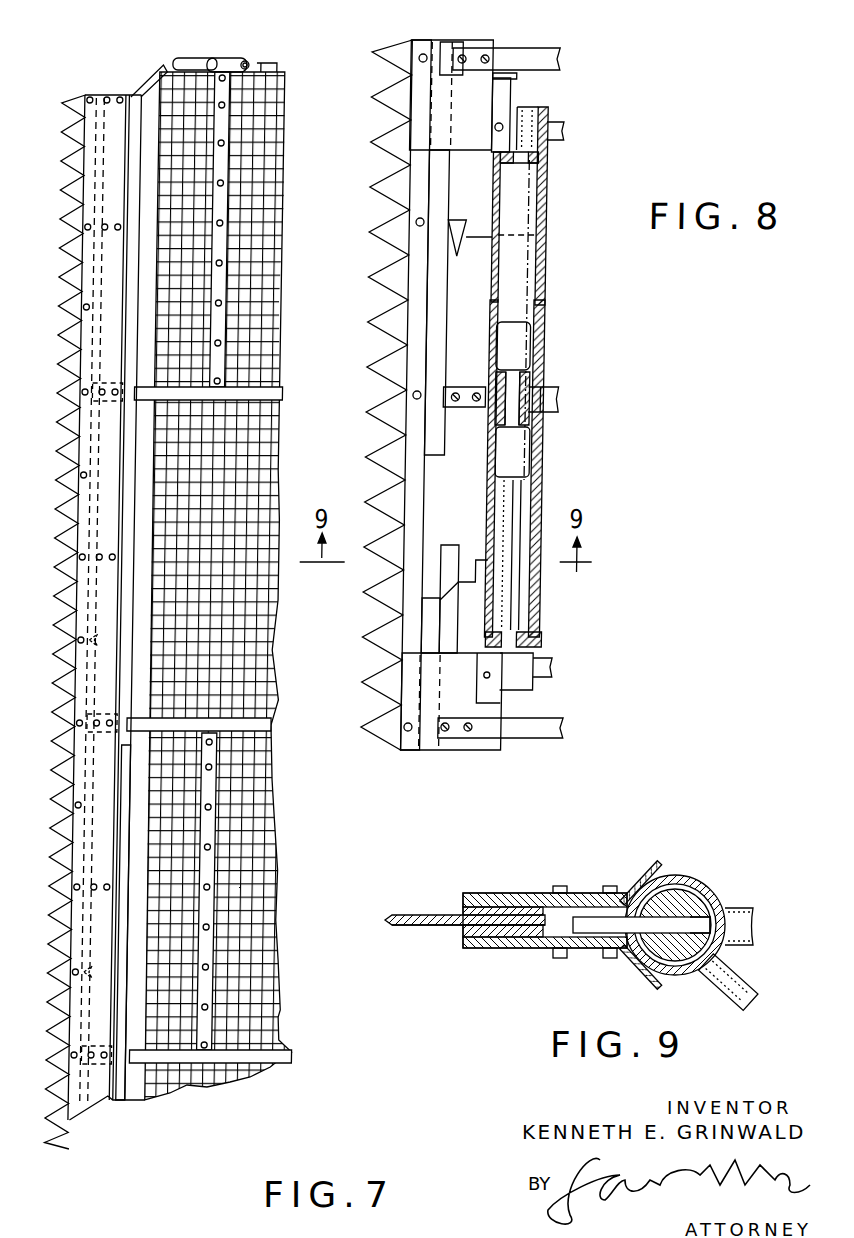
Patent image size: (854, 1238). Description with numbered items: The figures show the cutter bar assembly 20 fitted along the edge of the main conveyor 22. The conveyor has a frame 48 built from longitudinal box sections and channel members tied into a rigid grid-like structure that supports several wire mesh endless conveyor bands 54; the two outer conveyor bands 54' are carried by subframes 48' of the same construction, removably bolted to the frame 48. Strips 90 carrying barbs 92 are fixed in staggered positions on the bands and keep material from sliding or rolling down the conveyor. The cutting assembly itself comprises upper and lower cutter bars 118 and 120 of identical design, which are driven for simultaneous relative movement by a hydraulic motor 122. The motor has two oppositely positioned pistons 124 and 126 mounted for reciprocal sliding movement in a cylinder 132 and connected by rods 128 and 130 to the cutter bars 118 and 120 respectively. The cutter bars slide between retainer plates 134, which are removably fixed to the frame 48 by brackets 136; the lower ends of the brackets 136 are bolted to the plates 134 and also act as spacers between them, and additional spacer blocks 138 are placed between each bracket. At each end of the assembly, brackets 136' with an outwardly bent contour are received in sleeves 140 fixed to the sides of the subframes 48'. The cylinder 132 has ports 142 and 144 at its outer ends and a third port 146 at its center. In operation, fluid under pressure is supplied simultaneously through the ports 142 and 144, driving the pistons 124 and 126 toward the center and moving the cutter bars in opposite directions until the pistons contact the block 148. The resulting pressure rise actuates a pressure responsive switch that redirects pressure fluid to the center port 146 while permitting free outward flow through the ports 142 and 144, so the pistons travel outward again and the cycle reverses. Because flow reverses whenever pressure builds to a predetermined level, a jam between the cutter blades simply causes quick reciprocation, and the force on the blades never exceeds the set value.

In FIG. 7, the cutter bar assembly 20 is at (95, 640).
In FIG. 7, the main conveyor 22 is at (205, 553).
In FIG. 7, the frame 48 is at (246, 746).
In FIG. 7, the subframe 48' is at (253, 232).
In FIG. 7, the wire mesh endless conveyor band 54 is at (243, 746).
In FIG. 7, the outer conveyor band 54' is at (241, 232).
In FIG. 7, the strip 90 is at (224, 213).
In FIG. 7, the barb 92 is at (227, 264).
In FIG. 7, the upper cutter bar 118 is at (87, 284).
In FIG. 8, the upper cutter bar 118 is at (398, 188).
In FIG. 9, the upper cutter bar 118 is at (410, 912).
In FIG. 8, the lower cutter bar 120 is at (395, 97).
In FIG. 9, the lower cutter bar 120 is at (425, 928).
In FIG. 7, the hydraulic motor 122 is at (125, 1040).
In FIG. 8, the hydraulic motor 122 is at (564, 345).
In FIG. 9, the hydraulic motor 122 is at (703, 872).
In FIG. 8, the piston 124 is at (547, 279).
In FIG. 8, the piston 126 is at (530, 609).
In FIG. 8, the rod 128 is at (482, 231).
In FIG. 8, the rod 130 is at (482, 560).
In FIG. 9, the rod 130 is at (674, 934).
In FIG. 8, the cylinder 132 is at (551, 450).
In FIG. 9, the cylinder 132 is at (721, 895).
In FIG. 7, the retainer plate 134 is at (95, 666).
In FIG. 8, the retainer plate 134 is at (455, 437).
In FIG. 9, the retainer plate 134 is at (484, 893).
In FIG. 7, the bracket 136 is at (78, 580).
In FIG. 8, the bracket 136 is at (547, 382).
In FIG. 7, the end bracket 136' is at (112, 66).
In FIG. 8, the spacer block 138 is at (469, 387).
In FIG. 9, the spacer block 138 is at (592, 937).
In FIG. 7, the sleeve 140 is at (218, 58).
In FIG. 8, the port 142 is at (567, 130).
In FIG. 9, the port 142 is at (748, 989).
In FIG. 8, the port 144 is at (565, 668).
In FIG. 8, the center port 146 is at (565, 401).
In FIG. 9, the center port 146 is at (754, 926).
In FIG. 8, the block 148 is at (547, 364).